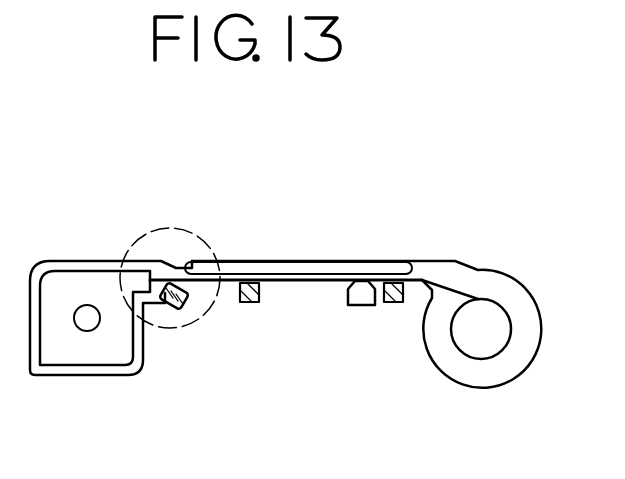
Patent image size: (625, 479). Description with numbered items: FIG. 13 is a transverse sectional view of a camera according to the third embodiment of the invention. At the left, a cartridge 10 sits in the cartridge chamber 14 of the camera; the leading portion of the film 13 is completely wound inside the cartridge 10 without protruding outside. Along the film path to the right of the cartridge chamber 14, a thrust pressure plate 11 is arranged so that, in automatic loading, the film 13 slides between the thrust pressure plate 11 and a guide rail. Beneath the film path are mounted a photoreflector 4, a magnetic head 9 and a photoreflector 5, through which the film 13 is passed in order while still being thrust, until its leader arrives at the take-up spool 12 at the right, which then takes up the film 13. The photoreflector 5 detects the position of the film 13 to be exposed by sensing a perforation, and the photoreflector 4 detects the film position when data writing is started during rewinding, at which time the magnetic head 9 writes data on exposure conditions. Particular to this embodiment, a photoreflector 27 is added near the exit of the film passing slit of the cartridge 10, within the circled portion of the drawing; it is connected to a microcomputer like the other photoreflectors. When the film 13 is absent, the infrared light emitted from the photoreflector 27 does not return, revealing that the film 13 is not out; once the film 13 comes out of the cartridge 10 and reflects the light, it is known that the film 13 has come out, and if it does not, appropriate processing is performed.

The photoreflector 4 is at (250, 302).
The photoreflector 5 is at (393, 302).
The magnetic head 9 is at (355, 305).
The cartridge 10 is at (84, 357).
The thrust pressure plate 11 is at (292, 262).
The take-up spool 12 is at (497, 343).
The film 13 is at (465, 290).
The cartridge chamber 14 is at (88, 260).
The photoreflector 27 is at (180, 292).